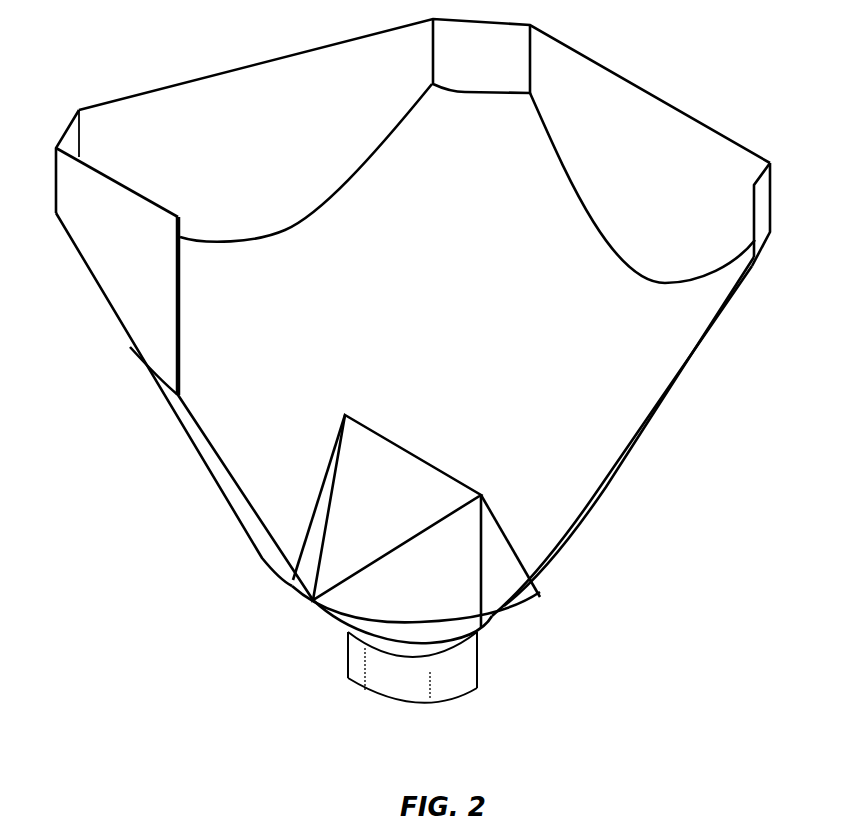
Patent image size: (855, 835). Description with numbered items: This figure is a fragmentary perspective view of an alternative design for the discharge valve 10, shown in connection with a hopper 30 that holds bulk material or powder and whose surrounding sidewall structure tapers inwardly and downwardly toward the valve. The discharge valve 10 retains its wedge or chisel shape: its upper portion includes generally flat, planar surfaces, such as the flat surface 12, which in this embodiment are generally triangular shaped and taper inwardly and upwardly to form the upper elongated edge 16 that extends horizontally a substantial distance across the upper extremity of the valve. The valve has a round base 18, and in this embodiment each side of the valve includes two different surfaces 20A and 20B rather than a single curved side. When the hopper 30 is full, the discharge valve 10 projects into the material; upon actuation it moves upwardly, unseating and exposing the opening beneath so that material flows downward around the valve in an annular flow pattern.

The discharge valve 10 is at (442, 363).
The flat planar surface 12 is at (397, 509).
The upper elongated edge 16 is at (403, 445).
The round base 18 is at (343, 619).
The side surface 20A is at (427, 592).
The side surface 20B is at (512, 562).
The hopper 30 is at (635, 338).